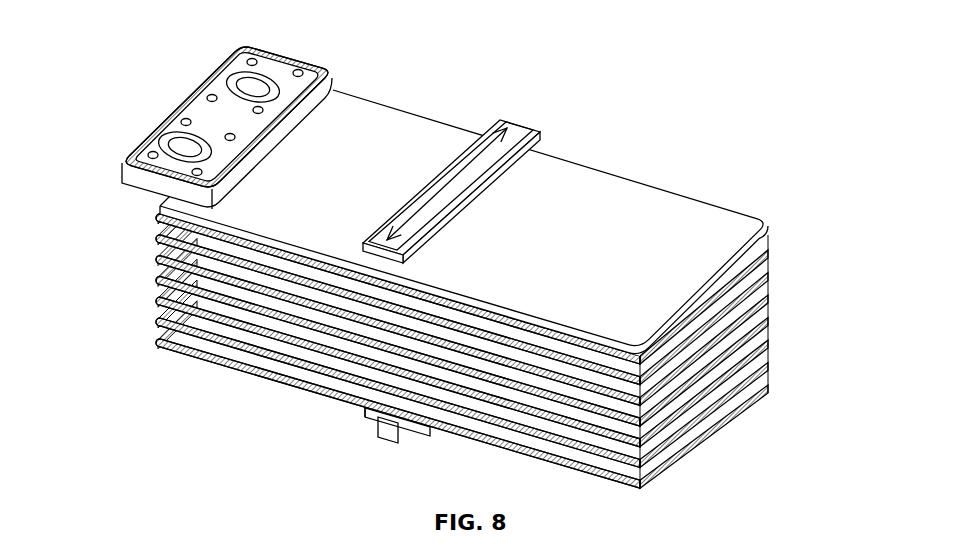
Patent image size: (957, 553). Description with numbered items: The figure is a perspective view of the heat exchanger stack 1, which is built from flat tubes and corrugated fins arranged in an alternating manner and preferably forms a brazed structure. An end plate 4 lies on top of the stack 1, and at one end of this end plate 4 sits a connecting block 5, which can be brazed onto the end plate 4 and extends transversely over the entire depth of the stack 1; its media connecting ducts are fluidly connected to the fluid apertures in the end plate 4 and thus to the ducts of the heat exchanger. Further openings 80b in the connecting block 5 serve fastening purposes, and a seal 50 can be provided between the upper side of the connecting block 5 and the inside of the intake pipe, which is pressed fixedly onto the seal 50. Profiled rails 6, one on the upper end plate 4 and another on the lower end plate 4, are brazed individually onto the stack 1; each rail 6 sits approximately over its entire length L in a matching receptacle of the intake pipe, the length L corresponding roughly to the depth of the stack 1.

The stack 1 is at (236, 397).
The end plate 4 is at (667, 247).
The connecting block 5 is at (275, 66).
The profiled rail 6 is at (482, 133).
The seal 50 is at (153, 172).
The openings 80b is at (248, 59).
The length L is at (463, 160).